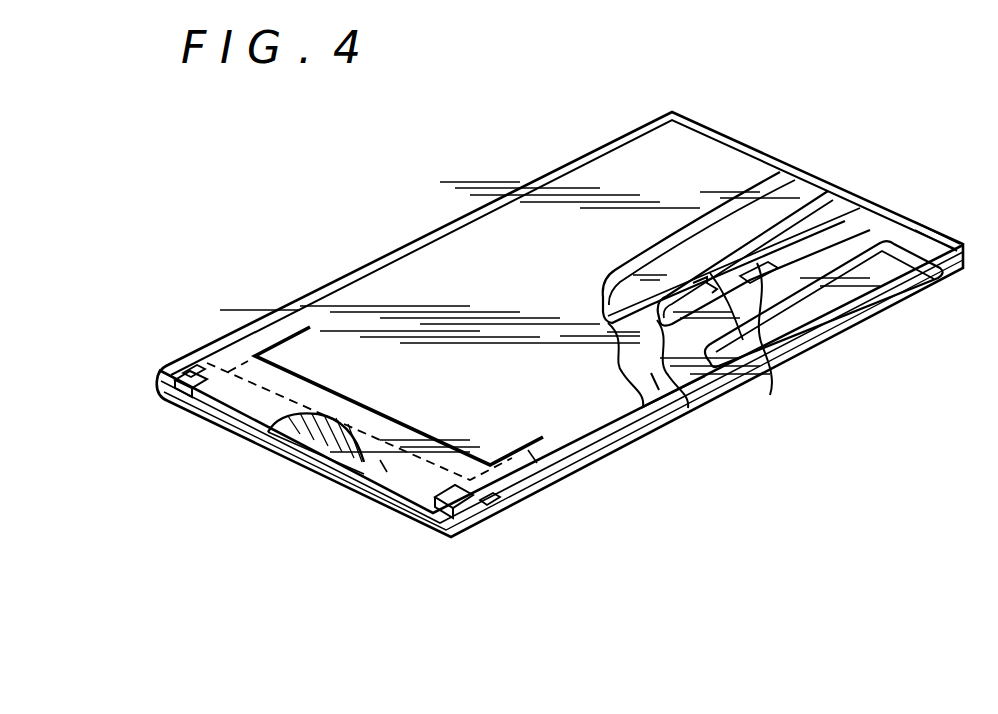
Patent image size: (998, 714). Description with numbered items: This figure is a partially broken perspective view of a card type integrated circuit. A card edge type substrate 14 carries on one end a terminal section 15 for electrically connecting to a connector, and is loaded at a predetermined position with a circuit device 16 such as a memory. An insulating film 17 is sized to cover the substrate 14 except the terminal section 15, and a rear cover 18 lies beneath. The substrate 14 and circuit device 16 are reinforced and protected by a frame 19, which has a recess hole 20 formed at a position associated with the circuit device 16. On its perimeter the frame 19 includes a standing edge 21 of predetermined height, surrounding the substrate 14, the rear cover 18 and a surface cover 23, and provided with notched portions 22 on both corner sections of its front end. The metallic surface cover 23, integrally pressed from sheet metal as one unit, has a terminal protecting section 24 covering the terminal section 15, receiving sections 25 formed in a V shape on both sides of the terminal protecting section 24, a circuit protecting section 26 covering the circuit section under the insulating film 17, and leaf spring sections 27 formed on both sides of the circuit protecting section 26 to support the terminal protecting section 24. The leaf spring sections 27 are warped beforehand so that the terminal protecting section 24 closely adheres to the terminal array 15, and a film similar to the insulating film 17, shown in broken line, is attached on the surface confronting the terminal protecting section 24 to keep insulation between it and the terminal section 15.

The card edge type substrate 14 is at (655, 378).
The terminal section 15 is at (330, 447).
The circuit device 16 is at (712, 291).
The insulating film 17 is at (797, 195).
The rear cover 18 is at (865, 296).
The frame 19 is at (851, 233).
The recess hole 20 is at (768, 286).
The standing edge 21 is at (941, 237).
The notched portions 22 is at (175, 396).
The surface cover 23 is at (618, 178).
The terminal protecting section 24 is at (383, 466).
The receiving sections 25 is at (188, 360).
The circuit protecting section 26 is at (518, 218).
The leaf spring sections 27 is at (276, 326).